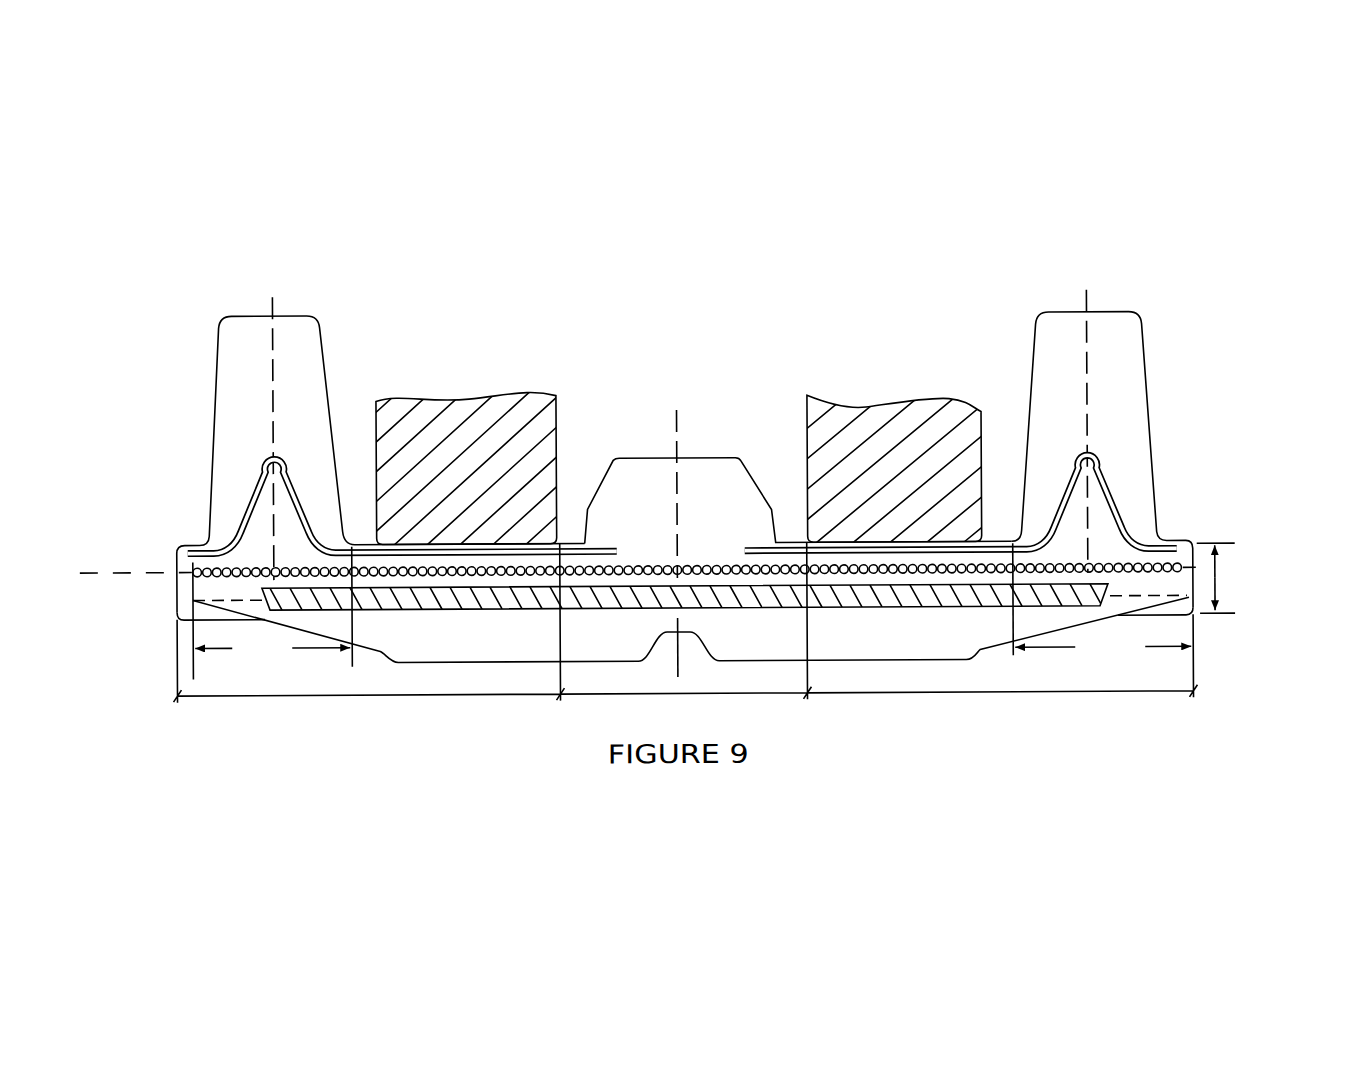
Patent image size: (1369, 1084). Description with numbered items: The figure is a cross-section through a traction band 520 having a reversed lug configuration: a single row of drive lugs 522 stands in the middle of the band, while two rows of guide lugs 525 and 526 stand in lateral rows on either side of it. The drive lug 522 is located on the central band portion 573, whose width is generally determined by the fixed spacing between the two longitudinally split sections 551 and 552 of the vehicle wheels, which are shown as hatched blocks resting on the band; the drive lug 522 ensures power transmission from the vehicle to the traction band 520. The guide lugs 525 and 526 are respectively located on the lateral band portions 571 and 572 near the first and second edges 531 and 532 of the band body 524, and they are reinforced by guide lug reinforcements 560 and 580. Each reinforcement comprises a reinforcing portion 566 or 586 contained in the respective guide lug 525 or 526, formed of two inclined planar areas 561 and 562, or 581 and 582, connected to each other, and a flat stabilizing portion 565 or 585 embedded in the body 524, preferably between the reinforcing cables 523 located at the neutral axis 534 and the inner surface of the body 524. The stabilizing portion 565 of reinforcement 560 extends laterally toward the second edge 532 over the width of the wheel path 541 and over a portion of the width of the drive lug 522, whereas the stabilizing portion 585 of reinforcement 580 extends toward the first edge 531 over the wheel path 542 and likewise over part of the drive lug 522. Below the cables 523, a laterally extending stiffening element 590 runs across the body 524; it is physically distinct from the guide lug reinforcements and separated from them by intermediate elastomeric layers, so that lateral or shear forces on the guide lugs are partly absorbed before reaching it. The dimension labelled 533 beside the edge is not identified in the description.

The traction band 520 is at (760, 459).
The drive lug 522 is at (693, 453).
The reinforcing cables 523 is at (734, 562).
The band body 524 is at (183, 605).
The guide lug 525 is at (1150, 365).
The guide lug 526 is at (217, 361).
The first edge 531 is at (1214, 521).
The second edge 532 is at (156, 537).
The wall height 533 is at (1220, 566).
The neutral axis 534 is at (88, 576).
The wheel path 541 is at (794, 432).
The wheel path 542 is at (583, 432).
The longitudinally split section of wheels 551 is at (950, 398).
The longitudinally split section of wheels 552 is at (431, 393).
The guide lug reinforcement 560 is at (1100, 442).
The inclined planar area 561 is at (1119, 482).
The inclined planar area 562 is at (1053, 490).
The stabilizing portion 565 is at (1003, 541).
The reinforcing portion 566 is at (1102, 605).
The lateral band portion 571 is at (933, 697).
The lateral band portion 572 is at (295, 697).
The central band portion 573 is at (626, 697).
The guide lug reinforcement 580 is at (264, 452).
The inclined planar area 581 is at (244, 504).
The inclined planar area 582 is at (313, 494).
The stabilizing portion 585 is at (365, 543).
The reinforcing portion 586 is at (273, 613).
The laterally extending stiffening element 590 is at (500, 610).